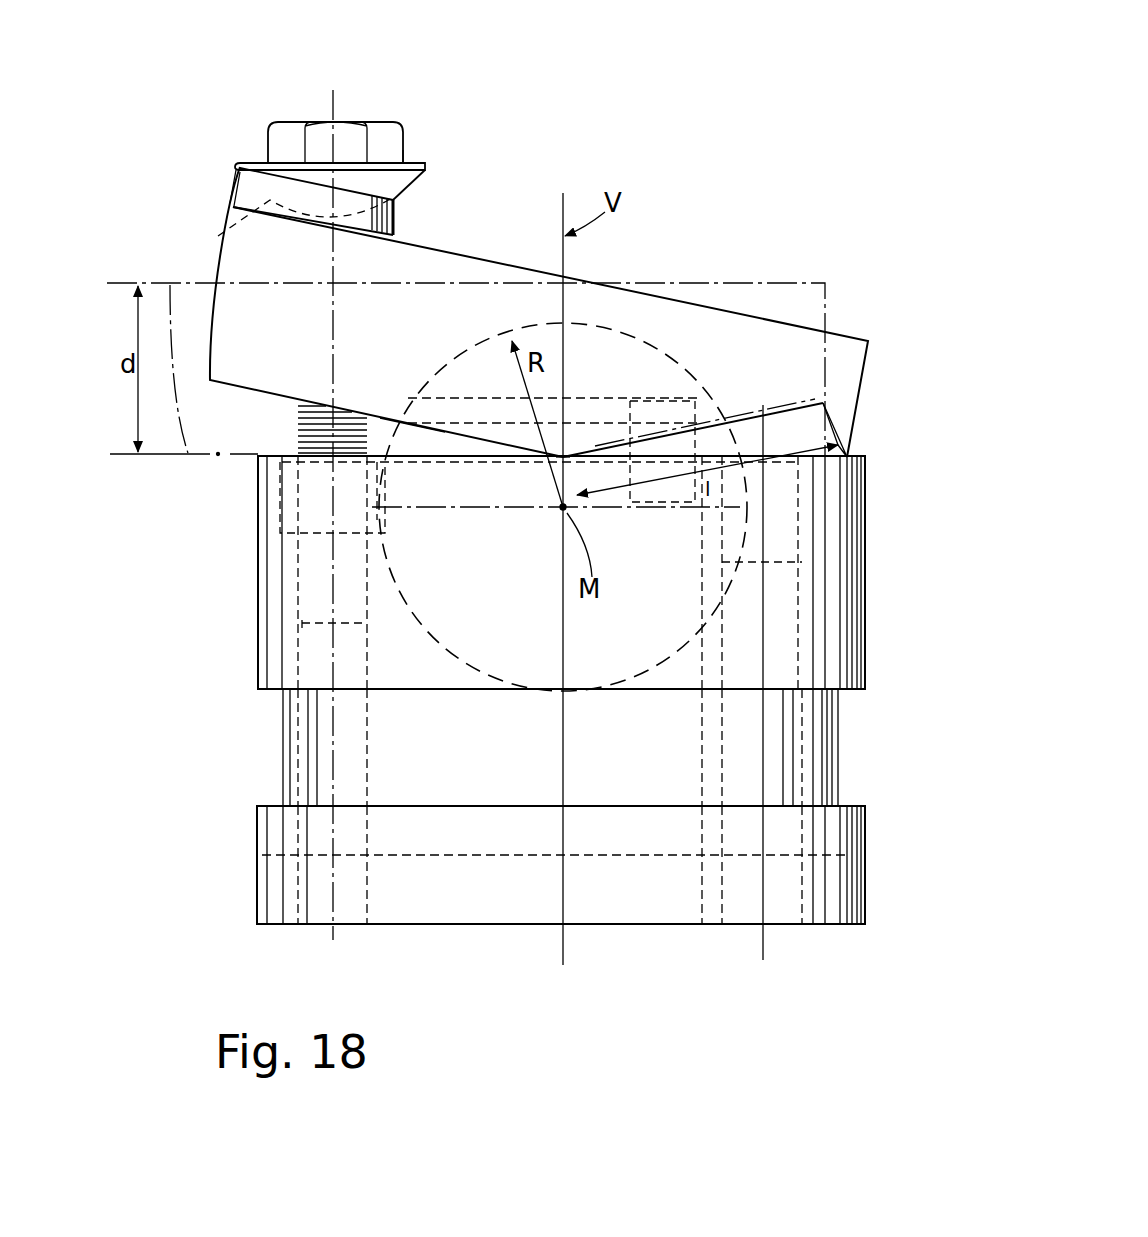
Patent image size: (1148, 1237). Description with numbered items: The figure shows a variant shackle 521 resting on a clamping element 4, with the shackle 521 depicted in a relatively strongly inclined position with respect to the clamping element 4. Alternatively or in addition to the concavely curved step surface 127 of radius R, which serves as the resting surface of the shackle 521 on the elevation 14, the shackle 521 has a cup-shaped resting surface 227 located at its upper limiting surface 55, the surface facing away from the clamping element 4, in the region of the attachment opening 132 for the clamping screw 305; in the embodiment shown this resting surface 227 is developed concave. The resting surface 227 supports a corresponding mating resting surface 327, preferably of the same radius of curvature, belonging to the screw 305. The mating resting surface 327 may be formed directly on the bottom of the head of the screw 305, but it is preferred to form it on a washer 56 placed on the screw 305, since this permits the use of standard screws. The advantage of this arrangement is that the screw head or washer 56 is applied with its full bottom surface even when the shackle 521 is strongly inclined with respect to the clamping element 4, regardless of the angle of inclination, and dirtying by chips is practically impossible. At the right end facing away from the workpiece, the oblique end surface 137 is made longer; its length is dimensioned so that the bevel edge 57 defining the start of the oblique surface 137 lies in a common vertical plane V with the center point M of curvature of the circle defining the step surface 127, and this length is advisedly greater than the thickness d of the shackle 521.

The clamping element 4 is at (870, 653).
The elevation 14 is at (722, 438).
The upper limiting surface 55 is at (850, 340).
The washer 56 is at (413, 157).
The bevel edge 57 is at (560, 462).
The step surface 127 is at (412, 404).
The attachment opening 132 is at (295, 422).
The oblique surface 137 is at (800, 418).
The cup-shaped resting surface 227 is at (215, 238).
The clamping screw 305 is at (347, 133).
The mating resting surface 327 is at (413, 192).
The shackle 521 is at (418, 262).